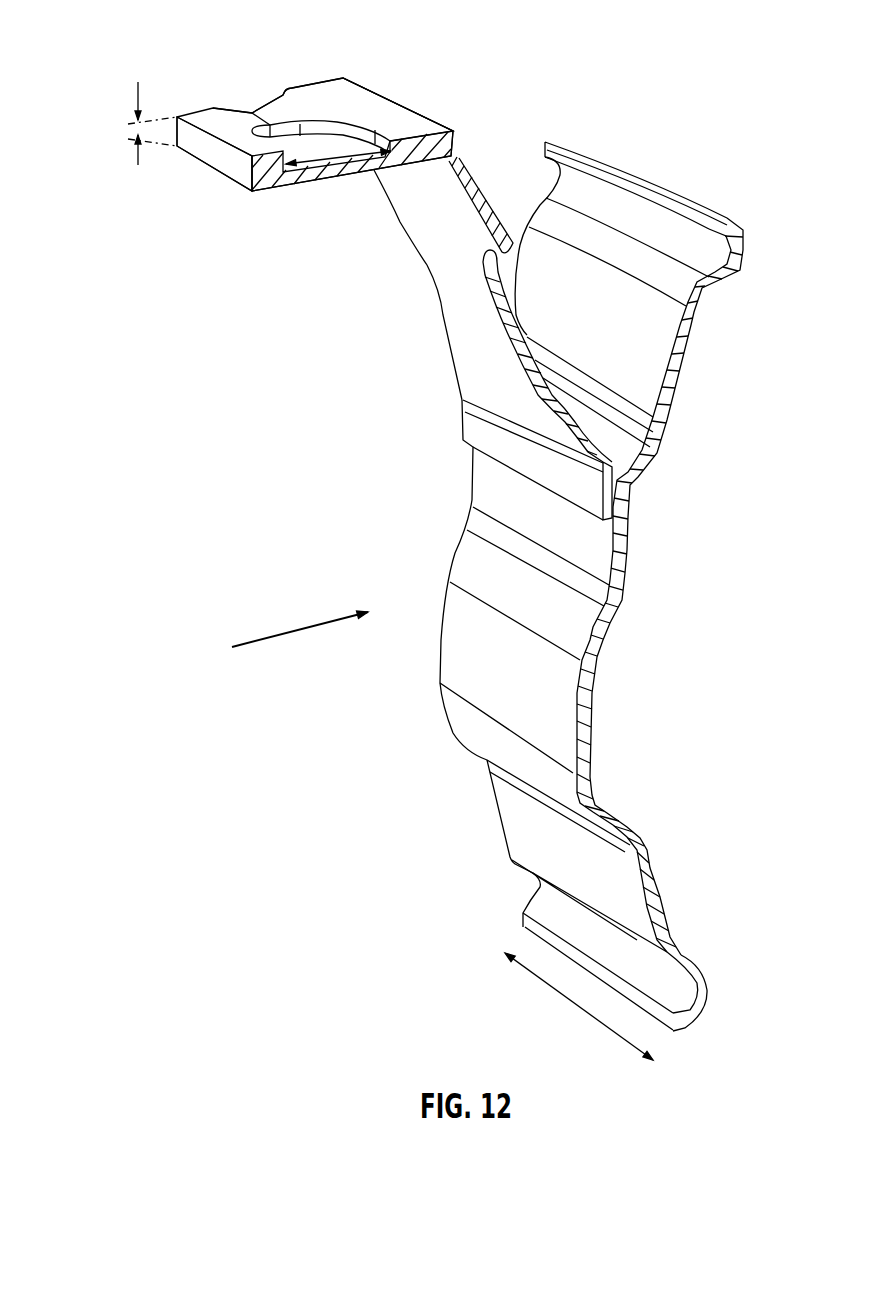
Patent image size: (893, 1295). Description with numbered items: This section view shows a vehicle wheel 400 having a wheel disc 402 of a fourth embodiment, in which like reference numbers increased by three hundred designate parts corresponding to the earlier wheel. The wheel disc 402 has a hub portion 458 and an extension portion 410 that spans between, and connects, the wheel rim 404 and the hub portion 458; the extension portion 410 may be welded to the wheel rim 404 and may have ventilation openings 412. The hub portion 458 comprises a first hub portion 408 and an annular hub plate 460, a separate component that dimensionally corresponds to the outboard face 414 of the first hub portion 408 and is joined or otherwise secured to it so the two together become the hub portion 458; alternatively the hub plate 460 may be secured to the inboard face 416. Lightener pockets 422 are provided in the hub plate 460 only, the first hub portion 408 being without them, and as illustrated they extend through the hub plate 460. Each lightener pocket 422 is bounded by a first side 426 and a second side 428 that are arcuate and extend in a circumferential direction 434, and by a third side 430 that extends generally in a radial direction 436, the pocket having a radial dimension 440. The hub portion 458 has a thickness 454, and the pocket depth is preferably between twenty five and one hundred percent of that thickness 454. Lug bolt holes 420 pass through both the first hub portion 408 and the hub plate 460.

The vehicle wheel 400 is at (655, 75).
The wheel disc 402 is at (330, 305).
The wheel rim 404 is at (660, 902).
The first hub portion 408 is at (242, 178).
The extension portion 410 is at (475, 368).
The ventilation openings 412 is at (543, 377).
The outboard face 414 is at (388, 148).
The inboard face 416 is at (375, 182).
The lug bolt holes 420 is at (272, 115).
The lightener pockets 422 is at (338, 148).
The first side 426 is at (268, 125).
The second side 428 is at (383, 120).
The third side 430 is at (312, 120).
The circumferential direction 434 is at (580, 1008).
The radial direction 436 is at (298, 630).
The radial dimension 440 is at (291, 168).
The thickness 454 is at (138, 82).
The hub portion 458 is at (263, 203).
The annular hub plate 460 is at (347, 100).